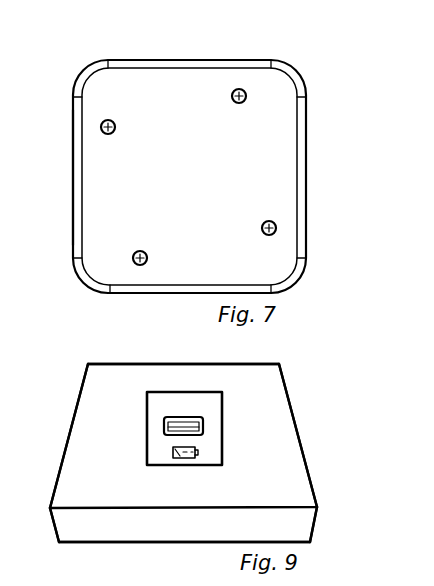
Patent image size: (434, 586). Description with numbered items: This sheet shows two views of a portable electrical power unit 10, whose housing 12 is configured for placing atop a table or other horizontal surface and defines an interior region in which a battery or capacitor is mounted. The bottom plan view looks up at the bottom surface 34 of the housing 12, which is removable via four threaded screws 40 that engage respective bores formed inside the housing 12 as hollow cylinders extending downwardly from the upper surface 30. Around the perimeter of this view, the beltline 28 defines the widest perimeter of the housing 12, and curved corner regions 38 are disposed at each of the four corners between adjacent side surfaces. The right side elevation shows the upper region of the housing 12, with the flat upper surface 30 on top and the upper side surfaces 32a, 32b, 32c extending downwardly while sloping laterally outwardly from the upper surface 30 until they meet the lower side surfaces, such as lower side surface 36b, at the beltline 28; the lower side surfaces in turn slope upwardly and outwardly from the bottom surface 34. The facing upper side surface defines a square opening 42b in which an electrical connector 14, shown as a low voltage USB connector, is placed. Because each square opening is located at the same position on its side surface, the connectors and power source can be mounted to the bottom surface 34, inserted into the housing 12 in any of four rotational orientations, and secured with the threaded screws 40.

In FIG. 7, the portable electrical power unit 10 is at (244, 43).
In FIG. 7, the housing 12 is at (164, 61).
In FIG. 9, the housing 12 is at (83, 382).
In FIG. 9, the electrical connector 14 is at (146, 432).
In FIG. 7, the beltline 28 is at (72, 135).
In FIG. 9, the beltline 28 is at (321, 505).
In FIG. 9, the upper surface 30 is at (124, 362).
In FIG. 9, the upper side surface 32a is at (63, 441).
In FIG. 9, the upper side surface 32b is at (88, 407).
In FIG. 9, the upper side surface 32c is at (297, 425).
In FIG. 7, the bottom surface 34 is at (191, 188).
In FIG. 9, the bottom surface 34 is at (152, 546).
In FIG. 9, the lower side surface 36b is at (90, 526).
In FIG. 7, the curved corner region 38 is at (86, 70).
In FIG. 7, the threaded screw 40 is at (116, 125).
In FIG. 9, the square opening 42b is at (224, 440).